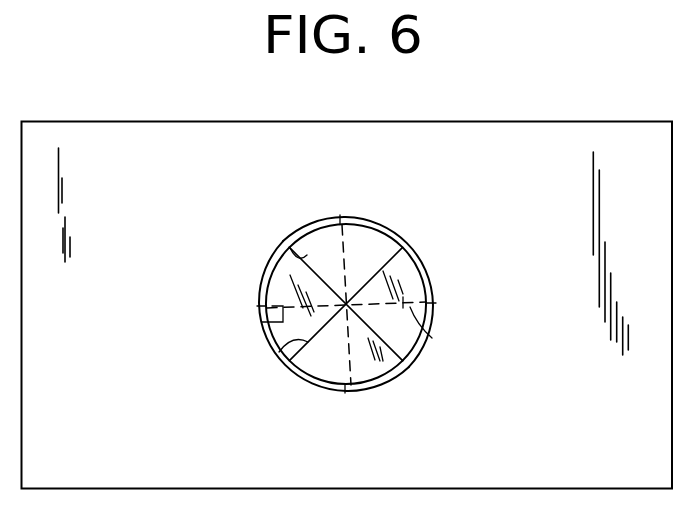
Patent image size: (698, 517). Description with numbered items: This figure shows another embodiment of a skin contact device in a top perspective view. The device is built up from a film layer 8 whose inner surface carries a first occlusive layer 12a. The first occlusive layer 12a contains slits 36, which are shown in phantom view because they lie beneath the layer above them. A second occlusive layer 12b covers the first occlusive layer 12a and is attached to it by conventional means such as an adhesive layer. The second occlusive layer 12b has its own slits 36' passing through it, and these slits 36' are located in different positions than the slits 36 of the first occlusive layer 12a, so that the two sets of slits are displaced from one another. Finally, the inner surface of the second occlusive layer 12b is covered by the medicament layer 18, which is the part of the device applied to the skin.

The film layer 8 is at (474, 137).
The medicament layer 18 is at (344, 307).
The first occlusive layer 12a is at (436, 232).
The second occlusive layer 12b is at (278, 272).
The slits 36 is at (351, 334).
The slits 36' is at (277, 280).